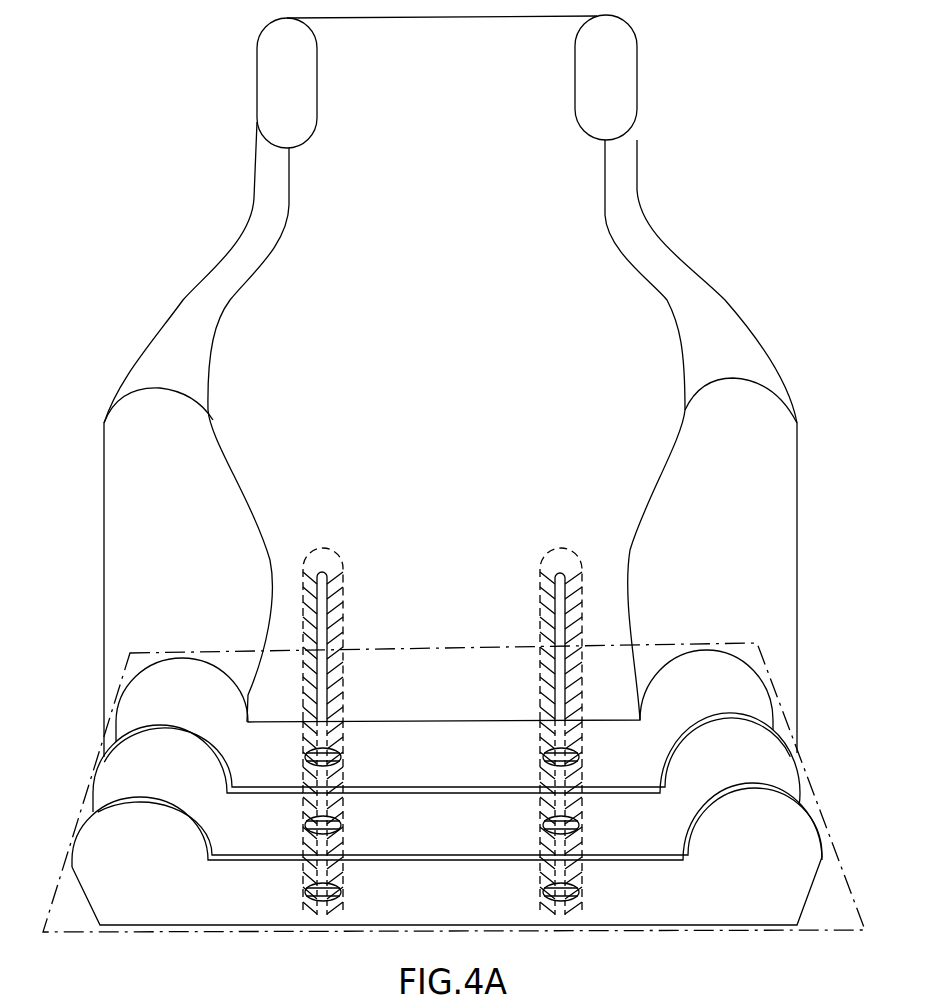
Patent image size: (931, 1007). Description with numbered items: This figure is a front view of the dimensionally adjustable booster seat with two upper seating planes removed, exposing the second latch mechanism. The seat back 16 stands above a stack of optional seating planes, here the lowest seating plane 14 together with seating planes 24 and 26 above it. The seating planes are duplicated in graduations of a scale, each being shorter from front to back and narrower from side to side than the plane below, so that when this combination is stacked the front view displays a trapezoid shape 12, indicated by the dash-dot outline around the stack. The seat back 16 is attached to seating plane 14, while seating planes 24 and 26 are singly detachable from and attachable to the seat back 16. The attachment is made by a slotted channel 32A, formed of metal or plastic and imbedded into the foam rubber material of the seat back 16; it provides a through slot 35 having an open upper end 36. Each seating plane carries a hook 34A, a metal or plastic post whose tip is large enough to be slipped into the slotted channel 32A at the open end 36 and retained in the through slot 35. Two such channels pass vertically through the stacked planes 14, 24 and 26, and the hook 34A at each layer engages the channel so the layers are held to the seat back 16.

The trapezoid shape 12 is at (795, 752).
The optional seating plane 14 is at (458, 903).
The seat back 16 is at (457, 362).
The optional seating plane 24 is at (457, 838).
The optional seating plane 26 is at (457, 770).
The slotted channel 32A is at (547, 577).
The hook 34A is at (580, 753).
The through slot 35 is at (328, 630).
The open upper end 36 is at (325, 560).